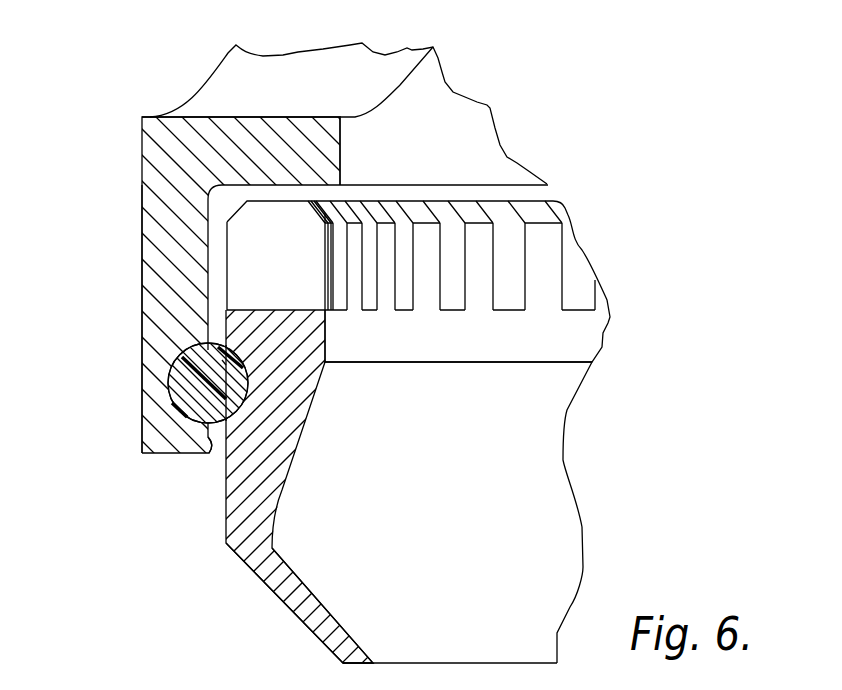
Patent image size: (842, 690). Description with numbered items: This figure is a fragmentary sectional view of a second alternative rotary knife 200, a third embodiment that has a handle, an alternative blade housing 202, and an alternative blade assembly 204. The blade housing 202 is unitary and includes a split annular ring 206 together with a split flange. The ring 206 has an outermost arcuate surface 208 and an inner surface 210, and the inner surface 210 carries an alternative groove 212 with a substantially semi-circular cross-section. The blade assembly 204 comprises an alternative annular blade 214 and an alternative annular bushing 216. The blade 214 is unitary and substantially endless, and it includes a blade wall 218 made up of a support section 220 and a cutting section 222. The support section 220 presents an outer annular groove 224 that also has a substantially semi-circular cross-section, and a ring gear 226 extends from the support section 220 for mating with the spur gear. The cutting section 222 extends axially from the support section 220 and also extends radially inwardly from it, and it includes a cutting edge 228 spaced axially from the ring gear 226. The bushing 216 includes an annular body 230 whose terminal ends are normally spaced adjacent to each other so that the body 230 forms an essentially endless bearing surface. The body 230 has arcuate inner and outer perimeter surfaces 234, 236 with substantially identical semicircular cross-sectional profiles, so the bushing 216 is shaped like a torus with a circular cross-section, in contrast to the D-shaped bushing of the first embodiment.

The rotary knife 200 is at (483, 84).
The blade housing 202 is at (155, 267).
The blade assembly 204 is at (464, 260).
The split annular ring 206 is at (158, 210).
The outermost arcuate surface 208 is at (142, 348).
The inner surface 210 is at (214, 444).
The groove 212 is at (173, 388).
The annular blade 214 is at (600, 333).
The annular bushing 216 is at (222, 360).
The blade wall 218 is at (553, 460).
The support section 220 is at (362, 485).
The cutting section 222 is at (272, 560).
The outer annular groove 224 is at (240, 402).
The ring gear 226 is at (552, 267).
The cutting edge 228 is at (440, 663).
The annular body 230 is at (207, 348).
The inner perimeter surface 234 is at (250, 370).
The outer perimeter surface 236 is at (226, 343).